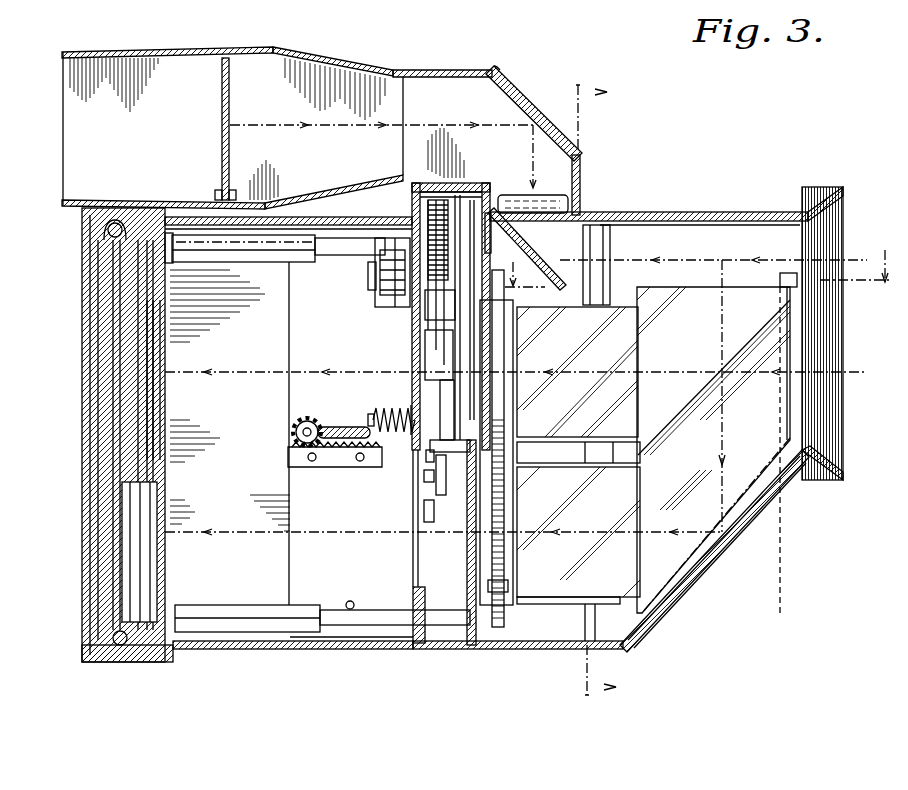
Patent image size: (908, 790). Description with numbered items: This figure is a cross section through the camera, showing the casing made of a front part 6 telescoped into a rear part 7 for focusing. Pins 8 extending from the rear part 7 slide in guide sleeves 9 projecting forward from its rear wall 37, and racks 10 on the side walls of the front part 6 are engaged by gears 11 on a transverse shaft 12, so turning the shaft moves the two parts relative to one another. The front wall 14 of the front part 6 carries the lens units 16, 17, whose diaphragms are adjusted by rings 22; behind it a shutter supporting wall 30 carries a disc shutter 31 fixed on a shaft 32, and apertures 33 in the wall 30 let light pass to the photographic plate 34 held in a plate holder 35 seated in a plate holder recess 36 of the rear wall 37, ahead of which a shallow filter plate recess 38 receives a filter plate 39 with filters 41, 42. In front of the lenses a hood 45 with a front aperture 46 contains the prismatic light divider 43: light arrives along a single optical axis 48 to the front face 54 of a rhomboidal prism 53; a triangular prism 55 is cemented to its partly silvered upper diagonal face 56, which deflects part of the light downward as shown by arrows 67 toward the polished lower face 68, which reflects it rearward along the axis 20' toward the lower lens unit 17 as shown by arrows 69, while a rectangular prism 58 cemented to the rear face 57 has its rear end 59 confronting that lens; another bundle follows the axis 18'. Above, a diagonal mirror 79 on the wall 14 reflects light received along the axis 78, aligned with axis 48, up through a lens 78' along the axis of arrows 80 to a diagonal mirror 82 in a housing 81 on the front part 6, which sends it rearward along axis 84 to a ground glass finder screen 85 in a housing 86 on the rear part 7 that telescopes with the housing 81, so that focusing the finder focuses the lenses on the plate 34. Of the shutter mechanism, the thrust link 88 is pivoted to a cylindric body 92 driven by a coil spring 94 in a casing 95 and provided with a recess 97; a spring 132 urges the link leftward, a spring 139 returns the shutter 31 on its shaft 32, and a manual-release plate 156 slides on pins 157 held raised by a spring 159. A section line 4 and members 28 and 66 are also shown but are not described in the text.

The section line 4 is at (700, 268).
The front part 6 is at (364, 662).
The rear part 7 is at (252, 650).
The pins 8 is at (326, 258).
The guide sleeves 9 is at (250, 262).
The racks 10 is at (330, 468).
The gears 11 is at (296, 436).
The transverse shaft 12 is at (312, 420).
The front wall 14 is at (478, 648).
The lens unit 16 is at (522, 318).
The lens unit 17 is at (508, 612).
The optical axis 18' is at (695, 355).
The optical axis 20' is at (445, 397).
The rings 22 is at (505, 365).
The bottom wall 28 is at (556, 650).
The shutter supporting wall 30 is at (430, 480).
The disc shutter 31 is at (450, 648).
The shaft 32 is at (375, 412).
The apertures 33 is at (425, 565).
The photographic plate 34 is at (112, 304).
The plate holder 35 is at (104, 230).
The plate holder recess 36 is at (96, 449).
The rear wall 37 is at (90, 368).
The filter plate recess 38 is at (160, 416).
The filter plate 39 is at (167, 455).
The filter 41 is at (150, 392).
The filter 42 is at (157, 510).
The prismatic light divider 43 is at (745, 500).
The hood 45 is at (665, 212).
The aperture 46 is at (825, 340).
The optical axis 48 is at (852, 365).
The rhomboidal prism 53 is at (700, 548).
The front face 54 is at (784, 430).
The triangular prism 55 is at (705, 298).
The upper diagonal face 56 is at (670, 426).
The rear face 57 is at (642, 513).
The rectangular prism 58 is at (626, 560).
The rear end 59 is at (530, 475).
The frame 66 is at (513, 393).
The arrows 67 is at (724, 398).
The lower face 68 is at (690, 580).
The arrows 69 is at (668, 530).
The axis 78 is at (713, 247).
The lens 78' is at (602, 237).
The diagonal mirror 79 is at (548, 276).
The arrows 80 is at (533, 188).
The housing 81 is at (535, 108).
The diagonal mirror 82 is at (512, 98).
The axis 84 is at (297, 128).
The ground glass finder screen 85 is at (222, 103).
The housing 86 is at (333, 58).
The thrust link 88 is at (430, 350).
The cylindric body 92 is at (425, 328).
The coil spring 94 is at (376, 288).
The casing 95 is at (376, 305).
The recess 97 is at (398, 310).
The spring 132 is at (440, 364).
The spring 139 is at (411, 408).
The plate 156 is at (434, 452).
The pins 157 is at (434, 476).
The spring 159 is at (434, 512).